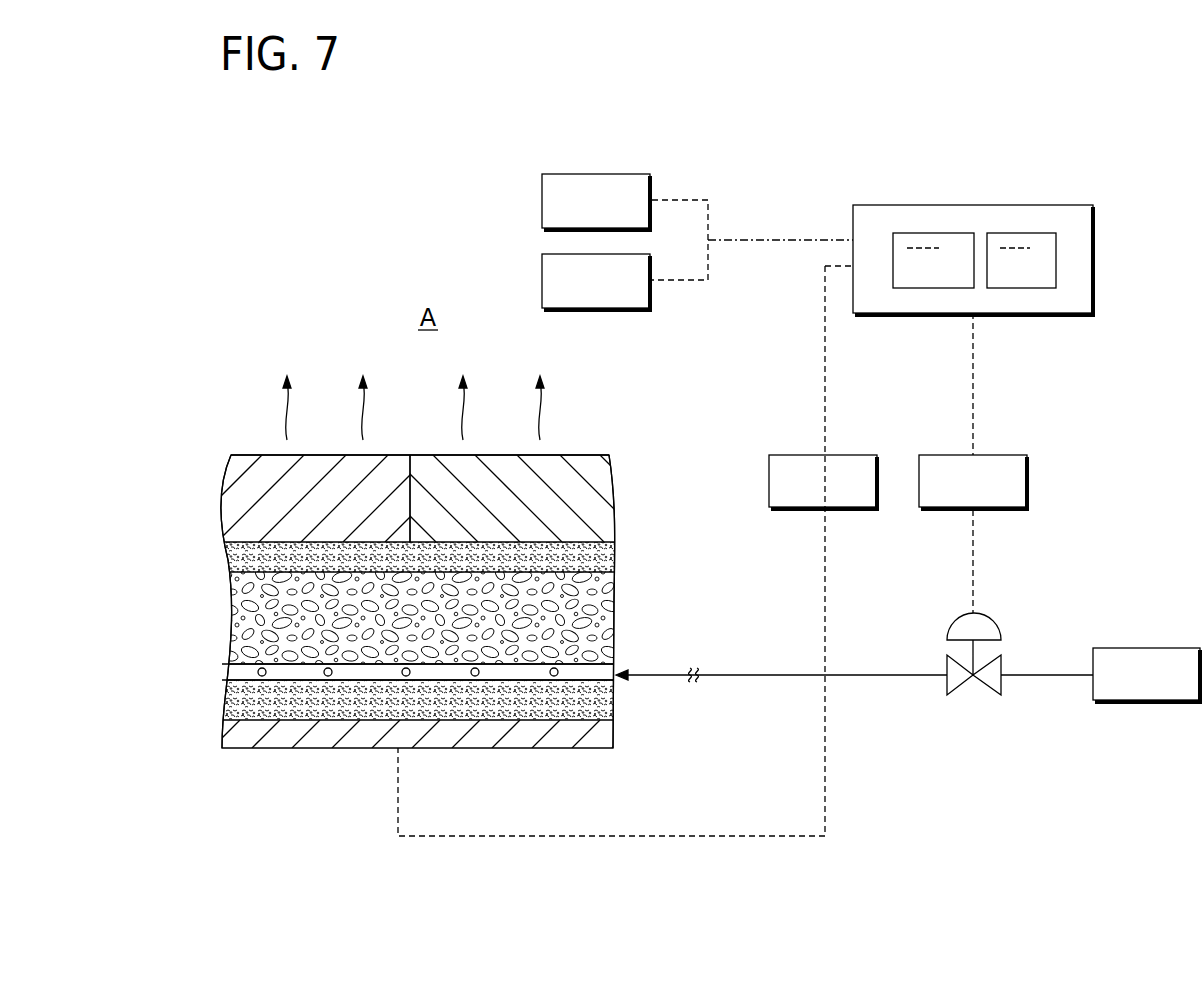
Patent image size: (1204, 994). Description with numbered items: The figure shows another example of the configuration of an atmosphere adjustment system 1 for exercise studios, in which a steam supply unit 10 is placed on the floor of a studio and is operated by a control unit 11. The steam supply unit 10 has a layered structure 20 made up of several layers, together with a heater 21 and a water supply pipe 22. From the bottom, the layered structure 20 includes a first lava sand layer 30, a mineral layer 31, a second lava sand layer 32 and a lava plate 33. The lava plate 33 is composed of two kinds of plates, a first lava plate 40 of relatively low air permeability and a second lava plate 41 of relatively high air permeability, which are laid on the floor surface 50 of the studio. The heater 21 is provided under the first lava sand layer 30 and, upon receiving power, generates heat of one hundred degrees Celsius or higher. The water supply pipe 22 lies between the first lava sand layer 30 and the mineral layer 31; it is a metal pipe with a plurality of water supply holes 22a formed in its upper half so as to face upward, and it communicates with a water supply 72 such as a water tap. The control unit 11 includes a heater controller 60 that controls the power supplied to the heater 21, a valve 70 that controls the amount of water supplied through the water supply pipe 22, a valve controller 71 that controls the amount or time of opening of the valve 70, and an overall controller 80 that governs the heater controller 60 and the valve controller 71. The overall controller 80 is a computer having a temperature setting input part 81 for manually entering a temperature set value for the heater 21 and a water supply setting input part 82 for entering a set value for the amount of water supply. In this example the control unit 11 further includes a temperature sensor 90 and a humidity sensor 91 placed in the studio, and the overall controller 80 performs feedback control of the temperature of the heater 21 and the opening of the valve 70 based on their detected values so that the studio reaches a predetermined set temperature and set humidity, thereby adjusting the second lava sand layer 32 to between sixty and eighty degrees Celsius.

The atmosphere adjustment system 1 is at (437, 222).
The steam supply unit 10 is at (422, 579).
The control unit 11 is at (827, 211).
The layered structure 20 is at (262, 454).
The heater 21 is at (543, 735).
The water supply pipe 22 is at (453, 716).
The water supply holes 22a is at (475, 676).
The first lava sand layer 30 is at (610, 704).
The mineral layer 31 is at (610, 597).
The second lava sand layer 32 is at (605, 553).
The lava plate 33 is at (617, 508).
The first lava plate 40 is at (228, 485).
The second lava plate 41 is at (600, 478).
The floor surface 50 is at (437, 455).
The heater controller 60 is at (800, 455).
The valve 70 is at (998, 620).
The valve controller 71 is at (990, 455).
The water supply 72 is at (1145, 648).
The overall controller 80 is at (1005, 249).
The temperature setting input part 81 is at (1057, 255).
The water supply setting input part 82 is at (893, 262).
The temperature sensor 90 is at (587, 173).
The humidity sensor 91 is at (578, 308).